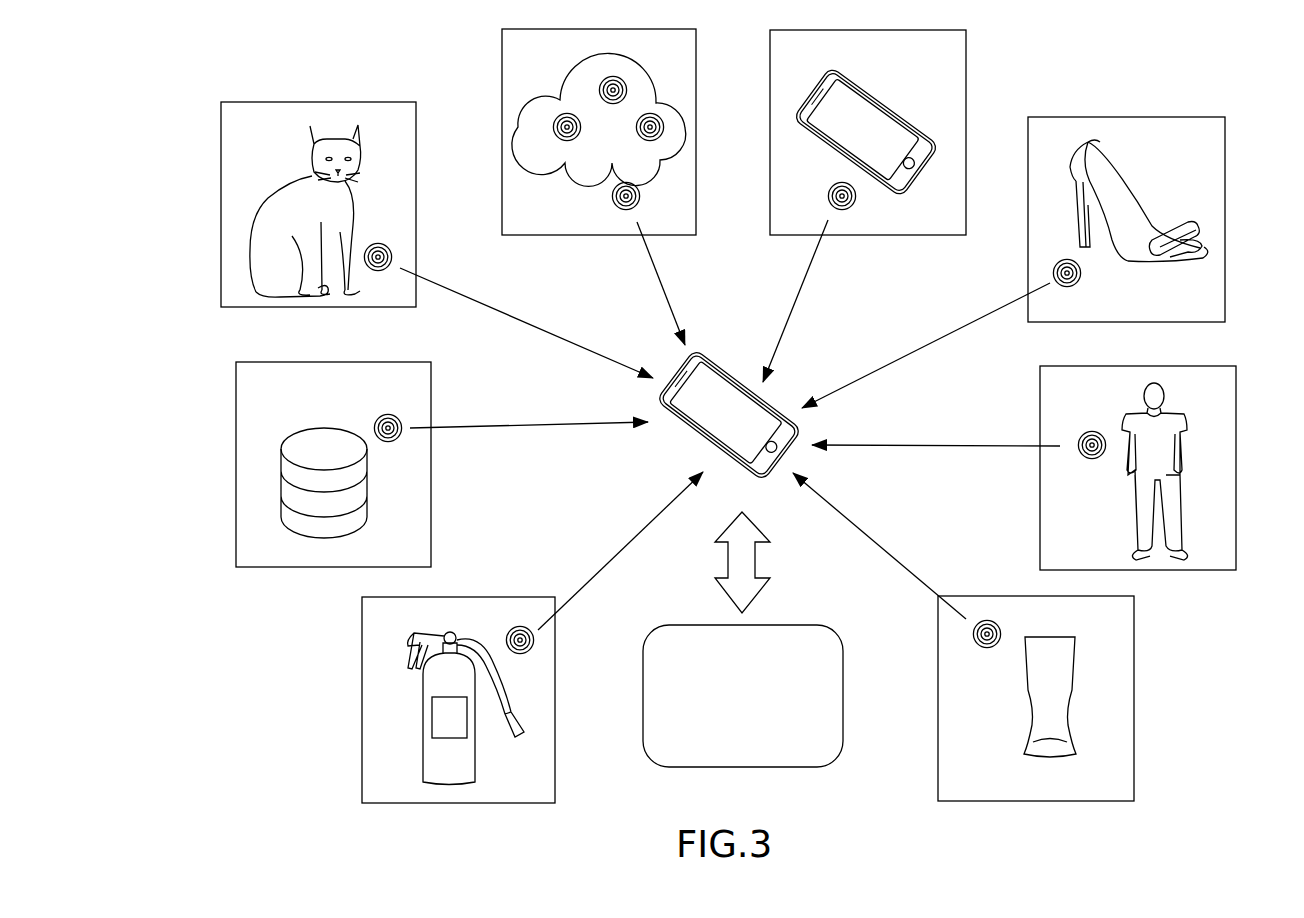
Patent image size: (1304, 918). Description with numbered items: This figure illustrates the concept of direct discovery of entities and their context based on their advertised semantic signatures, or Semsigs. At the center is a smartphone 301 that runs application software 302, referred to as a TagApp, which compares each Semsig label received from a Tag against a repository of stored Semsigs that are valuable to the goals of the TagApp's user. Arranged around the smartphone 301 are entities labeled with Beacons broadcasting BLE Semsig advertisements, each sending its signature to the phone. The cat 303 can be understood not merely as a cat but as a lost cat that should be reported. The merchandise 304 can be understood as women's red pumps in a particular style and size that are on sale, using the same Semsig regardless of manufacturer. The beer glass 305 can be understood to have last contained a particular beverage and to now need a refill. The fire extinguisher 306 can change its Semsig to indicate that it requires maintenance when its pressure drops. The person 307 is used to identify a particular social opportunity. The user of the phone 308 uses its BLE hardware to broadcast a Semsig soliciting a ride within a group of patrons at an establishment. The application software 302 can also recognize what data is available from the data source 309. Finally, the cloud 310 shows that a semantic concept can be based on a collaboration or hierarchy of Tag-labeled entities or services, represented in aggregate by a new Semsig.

The smartphone 301 is at (773, 483).
The application software 302 is at (825, 768).
The cat 303 is at (221, 296).
The merchandise 304 is at (1225, 305).
The beer glass 305 is at (1134, 769).
The fire extinguisher 306 is at (362, 782).
The social opportunity 307 is at (1236, 534).
The phone 308 is at (966, 48).
The data source 309 is at (236, 539).
The aggregate Semsig 310 is at (502, 36).